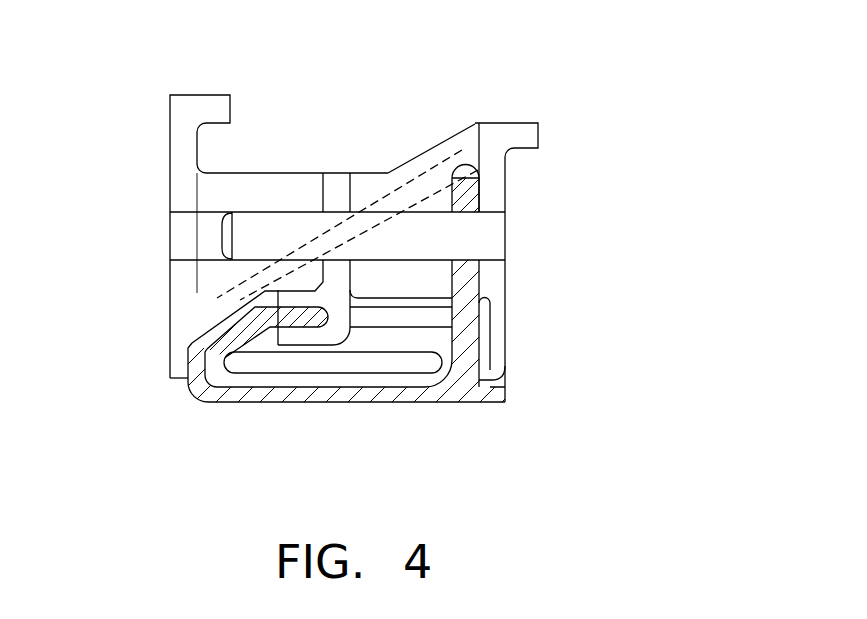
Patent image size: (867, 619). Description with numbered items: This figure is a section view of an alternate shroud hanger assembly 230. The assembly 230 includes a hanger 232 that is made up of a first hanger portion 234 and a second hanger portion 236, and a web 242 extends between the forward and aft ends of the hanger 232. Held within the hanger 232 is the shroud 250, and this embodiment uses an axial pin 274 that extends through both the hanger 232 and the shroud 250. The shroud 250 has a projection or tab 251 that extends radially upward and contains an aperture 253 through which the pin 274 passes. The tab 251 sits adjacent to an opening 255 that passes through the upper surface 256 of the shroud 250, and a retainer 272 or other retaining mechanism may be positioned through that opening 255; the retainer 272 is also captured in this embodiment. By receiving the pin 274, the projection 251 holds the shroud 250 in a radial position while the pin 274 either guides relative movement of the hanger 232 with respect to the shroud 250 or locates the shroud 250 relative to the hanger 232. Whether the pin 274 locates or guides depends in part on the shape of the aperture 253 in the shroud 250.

The hanger assembly 230 is at (561, 101).
The hanger 232 is at (168, 143).
The first hanger portion 234 is at (166, 303).
The second hanger portion 236 is at (513, 329).
The web 242 is at (457, 150).
The shroud 250 is at (455, 412).
The projection or tab 251 is at (463, 298).
The aperture 253 is at (482, 160).
The opening 255 is at (393, 325).
The upper surface 256 is at (242, 327).
The retainer 272 is at (337, 187).
The axial pin 274 is at (497, 233).